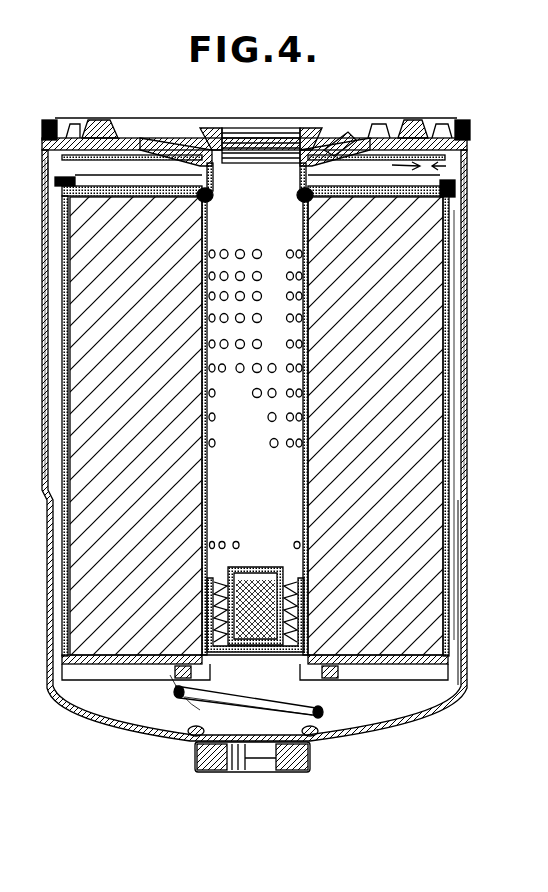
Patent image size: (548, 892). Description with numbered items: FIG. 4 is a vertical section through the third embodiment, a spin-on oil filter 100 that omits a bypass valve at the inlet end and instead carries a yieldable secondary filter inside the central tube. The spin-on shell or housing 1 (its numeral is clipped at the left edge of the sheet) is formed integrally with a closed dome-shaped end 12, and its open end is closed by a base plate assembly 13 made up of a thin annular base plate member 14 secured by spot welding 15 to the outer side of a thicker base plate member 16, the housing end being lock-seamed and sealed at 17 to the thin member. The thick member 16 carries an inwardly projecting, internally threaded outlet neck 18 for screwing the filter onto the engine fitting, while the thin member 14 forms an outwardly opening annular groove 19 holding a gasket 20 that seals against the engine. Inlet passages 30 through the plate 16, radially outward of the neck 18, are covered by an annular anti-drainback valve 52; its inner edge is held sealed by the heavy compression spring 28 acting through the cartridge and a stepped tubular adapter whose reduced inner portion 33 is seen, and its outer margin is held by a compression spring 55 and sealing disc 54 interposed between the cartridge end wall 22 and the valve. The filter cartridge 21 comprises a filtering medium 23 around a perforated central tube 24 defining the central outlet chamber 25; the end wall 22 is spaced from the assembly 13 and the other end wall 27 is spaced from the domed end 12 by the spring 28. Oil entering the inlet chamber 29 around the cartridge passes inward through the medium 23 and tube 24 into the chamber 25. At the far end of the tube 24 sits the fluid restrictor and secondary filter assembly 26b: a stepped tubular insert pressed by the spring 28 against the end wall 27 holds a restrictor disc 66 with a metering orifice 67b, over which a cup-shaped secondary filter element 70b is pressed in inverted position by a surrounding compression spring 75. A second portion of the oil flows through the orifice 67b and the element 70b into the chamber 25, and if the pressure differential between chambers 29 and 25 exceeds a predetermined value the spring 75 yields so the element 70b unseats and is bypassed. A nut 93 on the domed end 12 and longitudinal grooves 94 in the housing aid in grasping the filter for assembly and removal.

The filter assembly 1 is at (40, 352).
The dome-shaped end 12 is at (385, 726).
The base plate assembly 13 is at (440, 168).
The annular base plate member 14 is at (458, 128).
The spot welding 15 is at (470, 152).
The base plate member 16 is at (48, 155).
The lock seam 17 is at (44, 122).
The outlet neck 18 is at (226, 130).
The annular groove 19 is at (112, 134).
The annular gasket 20 is at (414, 128).
The filter cartridge 21 is at (452, 312).
The end wall 22 is at (75, 192).
The filtering medium 23 is at (426, 350).
The perforated central tube 24 is at (304, 299).
The central outlet chamber 25 is at (268, 503).
The fluid restrictor and secondary filter assembly 26b is at (195, 672).
The end wall 27 is at (392, 664).
The compression spring 28 is at (324, 712).
The inlet chamber 29 is at (452, 248).
The inlet passages 30 is at (350, 140).
The reduced inner portion 33 is at (214, 206).
The anti-drainback valve 52 is at (205, 160).
The sealing disc 54 is at (128, 172).
The compression spring 55 is at (377, 176).
The fluid restrictor disc 66 is at (232, 642).
The metering orifice 67b is at (238, 682).
The secondary filter element 70b is at (252, 566).
The compression spring 75 is at (290, 600).
The nut 93 is at (306, 758).
The longitudinal grooves 94 is at (470, 545).
The filter 100 is at (478, 221).